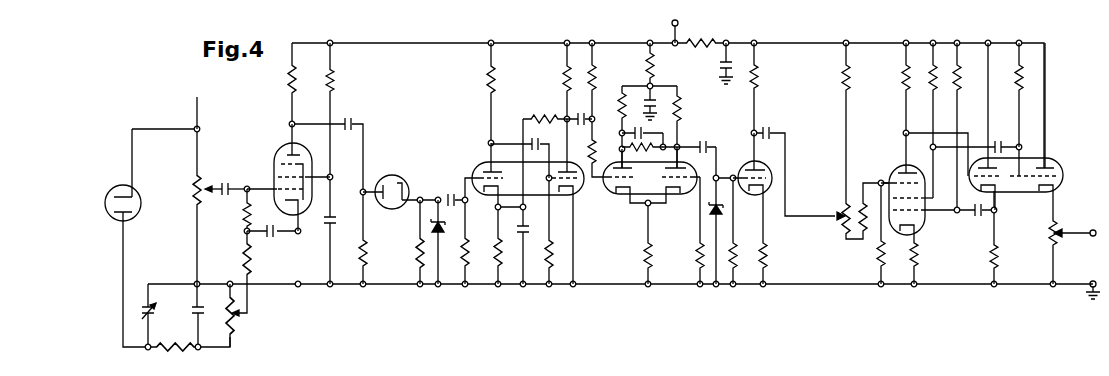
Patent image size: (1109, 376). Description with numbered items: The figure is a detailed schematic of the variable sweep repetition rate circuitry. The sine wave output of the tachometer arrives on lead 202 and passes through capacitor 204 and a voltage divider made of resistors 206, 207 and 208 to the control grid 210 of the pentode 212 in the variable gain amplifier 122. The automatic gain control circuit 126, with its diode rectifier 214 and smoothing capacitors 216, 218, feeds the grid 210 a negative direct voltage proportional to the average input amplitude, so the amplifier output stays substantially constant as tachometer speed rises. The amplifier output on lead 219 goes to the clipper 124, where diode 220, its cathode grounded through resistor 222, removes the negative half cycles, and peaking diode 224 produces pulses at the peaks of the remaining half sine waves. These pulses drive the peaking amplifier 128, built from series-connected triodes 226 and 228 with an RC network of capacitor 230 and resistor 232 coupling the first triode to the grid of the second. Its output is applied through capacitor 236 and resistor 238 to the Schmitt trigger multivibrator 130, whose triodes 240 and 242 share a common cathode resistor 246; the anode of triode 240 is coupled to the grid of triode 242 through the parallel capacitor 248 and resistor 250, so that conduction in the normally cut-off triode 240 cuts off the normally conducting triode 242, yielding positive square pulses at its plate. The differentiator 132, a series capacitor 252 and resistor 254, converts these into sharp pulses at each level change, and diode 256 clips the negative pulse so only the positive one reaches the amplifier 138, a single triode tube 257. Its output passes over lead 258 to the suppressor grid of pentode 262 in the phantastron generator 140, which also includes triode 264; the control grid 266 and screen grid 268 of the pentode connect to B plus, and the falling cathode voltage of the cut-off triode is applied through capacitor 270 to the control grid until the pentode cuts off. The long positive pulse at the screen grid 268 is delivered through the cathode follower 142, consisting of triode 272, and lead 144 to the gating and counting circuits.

The variable gain amplifier 122 is at (311, 40).
The clipper 124 is at (422, 38).
The automatic gain control circuit 126 is at (176, 110).
The peaking amplifier 128 is at (554, 38).
The Schmitt trigger multivibrator 130 is at (659, 36).
The differentiator 132 is at (726, 35).
The amplifier 138 is at (816, 36).
The phantastron generator 140 is at (919, 38).
The cathode follower 142 is at (1050, 36).
The lead 144 is at (1075, 245).
The lead 202 is at (198, 127).
The capacitor 204 is at (221, 182).
The resistor 206 is at (247, 212).
The resistor 207 is at (250, 270).
The resistor 208 is at (240, 321).
The control grid 210 is at (282, 188).
The pentode 212 is at (280, 150).
The diode rectifier 214 is at (138, 212).
The smoothing capacitor 216 is at (152, 314).
The smoothing capacitor 218 is at (197, 306).
The lead 219 is at (362, 128).
The diode 220 is at (402, 176).
The resistor 222 is at (422, 255).
The peaking diode 224 is at (434, 226).
The triode 226 is at (482, 163).
The triode 228 is at (580, 187).
The capacitor 230 is at (532, 140).
The resistor 232 is at (552, 253).
The capacitor 236 is at (578, 114).
The resistor 238 is at (593, 133).
The triode 240 is at (625, 197).
The triode 242 is at (682, 195).
The common resistor 246 is at (652, 252).
The capacitor 248 is at (657, 132).
The resistor 250 is at (658, 148).
The capacitor 252 is at (708, 147).
The resistor 254 is at (740, 257).
The diode 256 is at (722, 212).
The triode tube 257 is at (770, 165).
The lead 258 is at (832, 216).
The pentode 262 is at (907, 167).
The triode 264 is at (1000, 193).
The control grid 266 is at (916, 235).
The screen grid 268 is at (921, 199).
The capacitor 270 is at (979, 217).
The triode 272 is at (1053, 160).